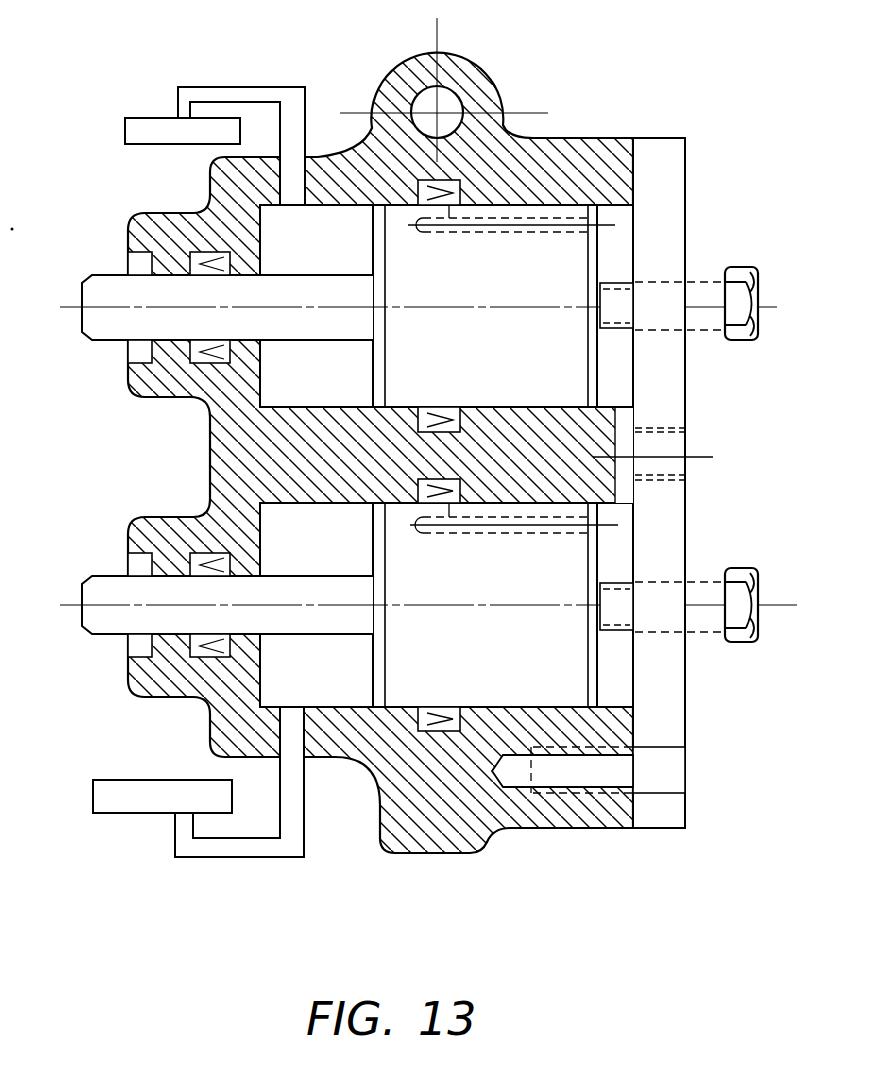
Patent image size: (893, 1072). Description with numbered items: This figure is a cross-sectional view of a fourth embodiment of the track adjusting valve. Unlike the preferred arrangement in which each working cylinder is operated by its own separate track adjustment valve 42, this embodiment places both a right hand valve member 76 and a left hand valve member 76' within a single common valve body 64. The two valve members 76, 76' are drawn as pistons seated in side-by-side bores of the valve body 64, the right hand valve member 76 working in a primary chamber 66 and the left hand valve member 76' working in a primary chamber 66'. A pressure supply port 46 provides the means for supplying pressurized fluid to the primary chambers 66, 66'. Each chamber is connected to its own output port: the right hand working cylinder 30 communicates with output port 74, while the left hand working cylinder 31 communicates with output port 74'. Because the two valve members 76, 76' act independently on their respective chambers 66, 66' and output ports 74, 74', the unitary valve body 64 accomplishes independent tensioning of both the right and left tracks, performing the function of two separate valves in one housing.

The right hand working cylinder 30 is at (150, 118).
The left hand working cylinder 31 is at (132, 780).
The track adjustment valve 42 is at (651, 122).
The pressure supply port 46 is at (668, 437).
The valve body 64 is at (403, 790).
The primary chamber 66 is at (446, 306).
The primary chamber 66' is at (446, 605).
The output port 74 is at (262, 110).
The output port 74' is at (268, 782).
The right hand valve member 76 is at (494, 306).
The left hand valve member 76' is at (495, 605).